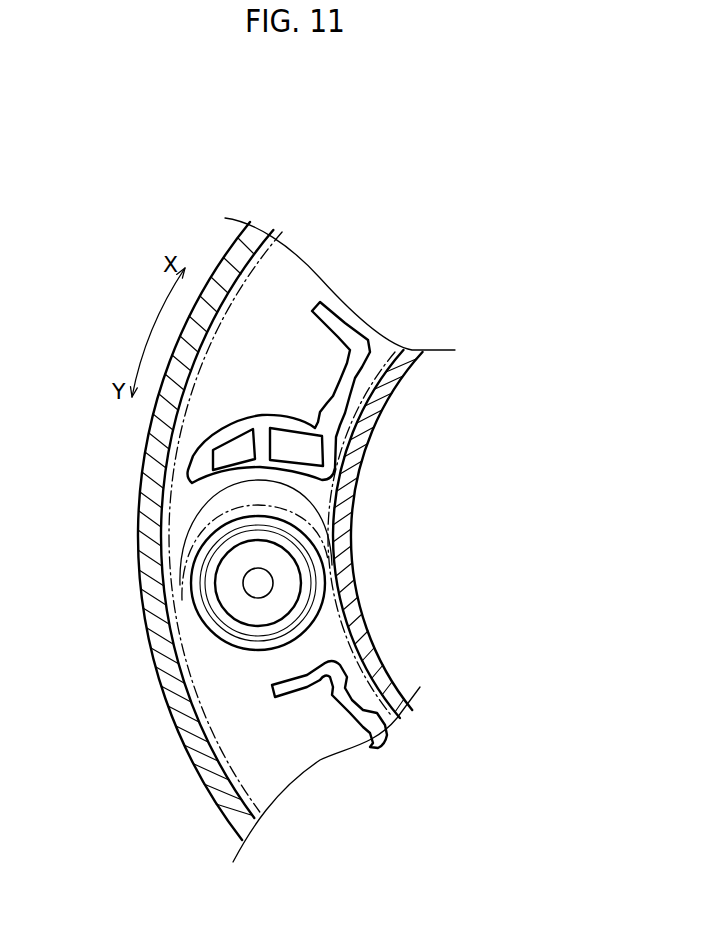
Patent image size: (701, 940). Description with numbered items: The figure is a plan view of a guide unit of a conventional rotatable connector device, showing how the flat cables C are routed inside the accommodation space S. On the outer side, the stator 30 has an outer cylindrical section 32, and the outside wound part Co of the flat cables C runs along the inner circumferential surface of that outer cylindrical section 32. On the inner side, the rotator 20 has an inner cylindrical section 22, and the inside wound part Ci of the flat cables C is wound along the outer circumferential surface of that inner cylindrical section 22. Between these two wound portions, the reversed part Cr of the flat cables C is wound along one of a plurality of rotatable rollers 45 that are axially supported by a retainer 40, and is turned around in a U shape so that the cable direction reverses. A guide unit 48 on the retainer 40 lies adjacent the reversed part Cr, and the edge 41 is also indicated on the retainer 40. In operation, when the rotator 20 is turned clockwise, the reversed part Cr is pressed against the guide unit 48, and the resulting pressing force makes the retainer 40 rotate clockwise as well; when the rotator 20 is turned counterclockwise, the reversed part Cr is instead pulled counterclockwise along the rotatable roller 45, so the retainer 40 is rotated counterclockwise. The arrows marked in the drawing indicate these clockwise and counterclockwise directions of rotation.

The rotator 20 is at (368, 628).
The inner cylindrical section 22 is at (364, 638).
The stator 30 is at (167, 705).
The outer cylindrical section 32 is at (180, 749).
The retainer 40 is at (283, 258).
The end wall edge 41 is at (287, 282).
The rotatable roller 45 is at (318, 572).
The guide unit 48 is at (195, 470).
The flat cables C is at (182, 642).
The inside wound part Ci is at (338, 612).
The outside wound part Co is at (222, 765).
The reversed part Cr is at (200, 529).
The accommodation space S is at (265, 746).